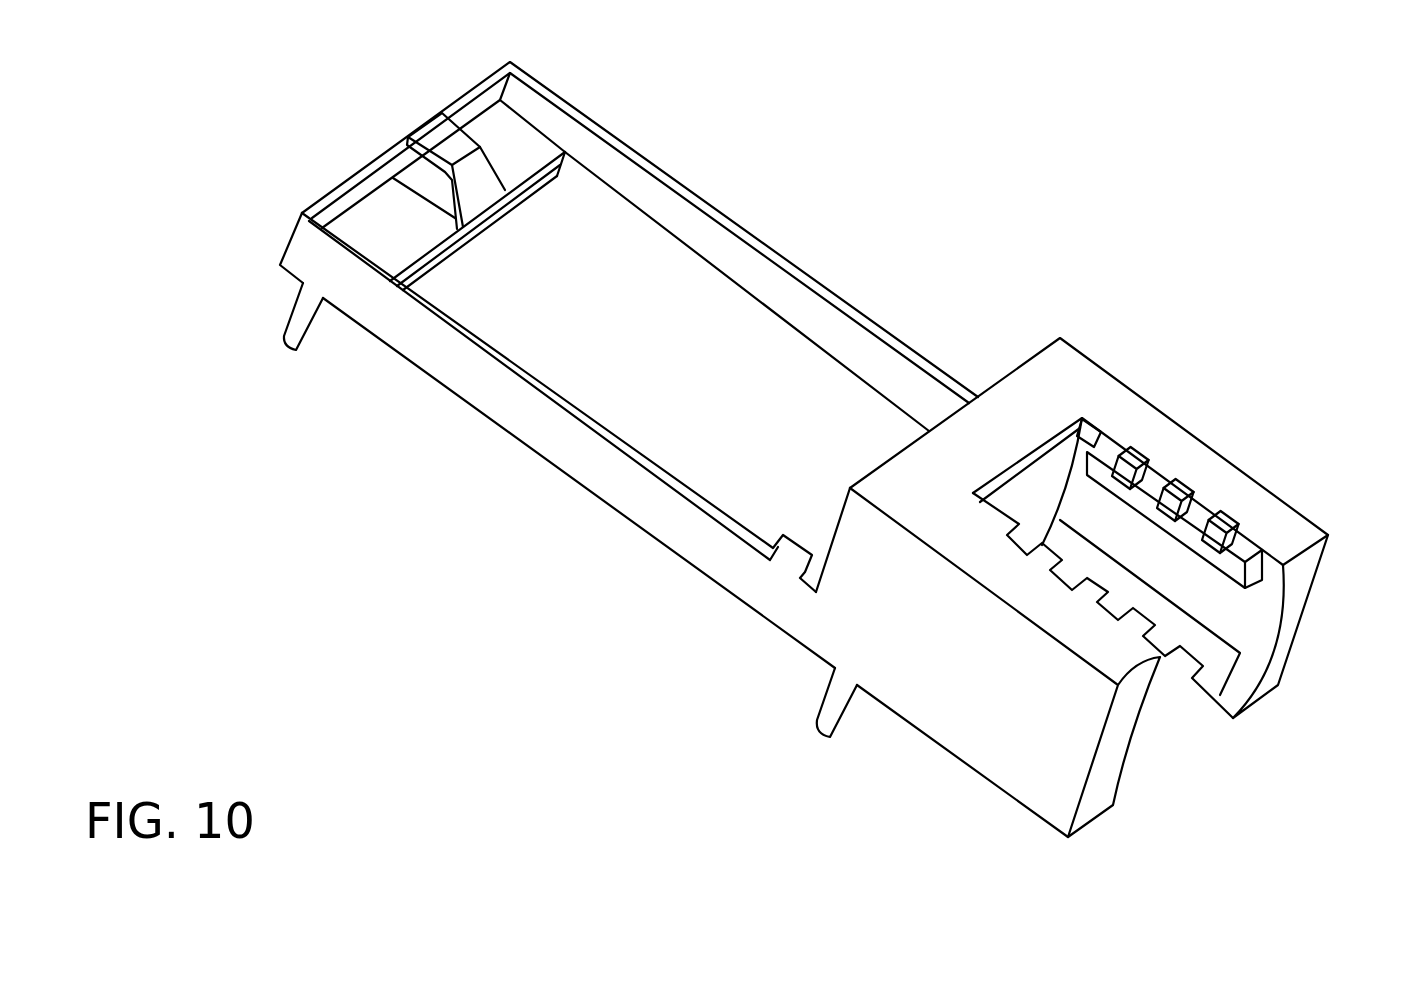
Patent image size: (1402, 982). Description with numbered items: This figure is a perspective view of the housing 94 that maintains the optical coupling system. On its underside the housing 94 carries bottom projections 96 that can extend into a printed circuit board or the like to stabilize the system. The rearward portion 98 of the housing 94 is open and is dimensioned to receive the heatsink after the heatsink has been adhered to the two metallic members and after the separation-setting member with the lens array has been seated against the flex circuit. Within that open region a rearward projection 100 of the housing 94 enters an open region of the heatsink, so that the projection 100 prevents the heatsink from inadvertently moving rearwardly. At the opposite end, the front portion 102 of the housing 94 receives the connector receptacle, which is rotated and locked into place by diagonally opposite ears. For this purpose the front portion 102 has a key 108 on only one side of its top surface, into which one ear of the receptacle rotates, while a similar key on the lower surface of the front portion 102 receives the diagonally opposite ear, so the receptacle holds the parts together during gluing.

The housing 94 is at (440, 640).
The bottom projections 96 is at (298, 345).
The rearward portion 98 is at (793, 297).
The rearward projection 100 is at (433, 137).
The front portion 102 is at (1277, 527).
The key 108 is at (1083, 438).